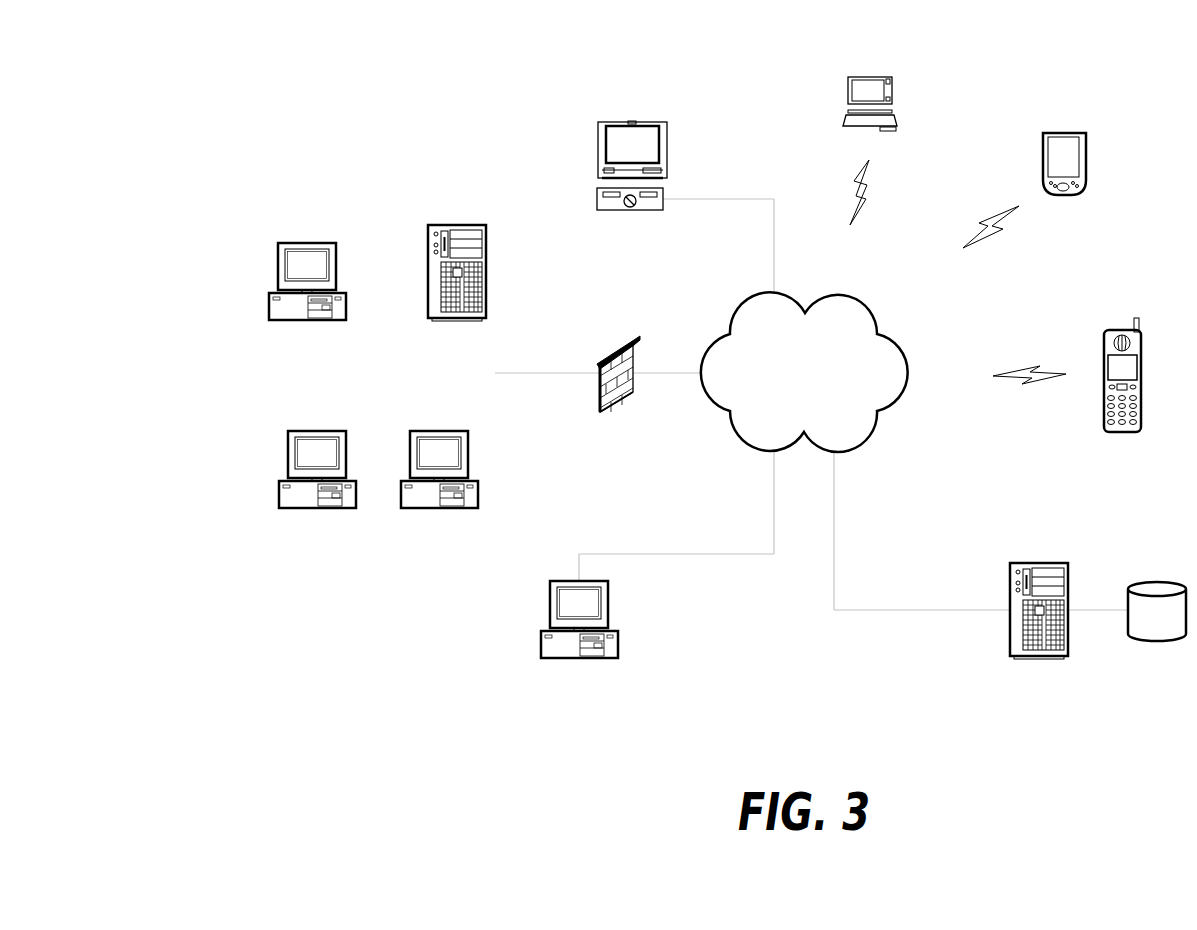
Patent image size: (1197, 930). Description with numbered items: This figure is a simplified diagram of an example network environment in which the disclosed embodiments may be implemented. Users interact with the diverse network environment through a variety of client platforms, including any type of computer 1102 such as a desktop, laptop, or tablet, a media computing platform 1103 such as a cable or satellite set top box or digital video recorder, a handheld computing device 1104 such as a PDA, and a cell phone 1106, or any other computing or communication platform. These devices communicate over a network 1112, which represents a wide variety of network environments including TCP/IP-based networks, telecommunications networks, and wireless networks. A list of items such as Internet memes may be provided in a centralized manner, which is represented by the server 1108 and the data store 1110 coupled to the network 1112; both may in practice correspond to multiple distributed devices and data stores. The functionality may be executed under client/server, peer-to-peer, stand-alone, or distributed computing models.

The computer 1102 is at (277, 272).
The media computing platform 1103 is at (597, 200).
The handheld computing device 1104 is at (1046, 132).
The cell phone 1106 is at (1106, 334).
The server 1108 is at (1017, 562).
The data store 1110 is at (1157, 581).
The network 1112 is at (745, 311).